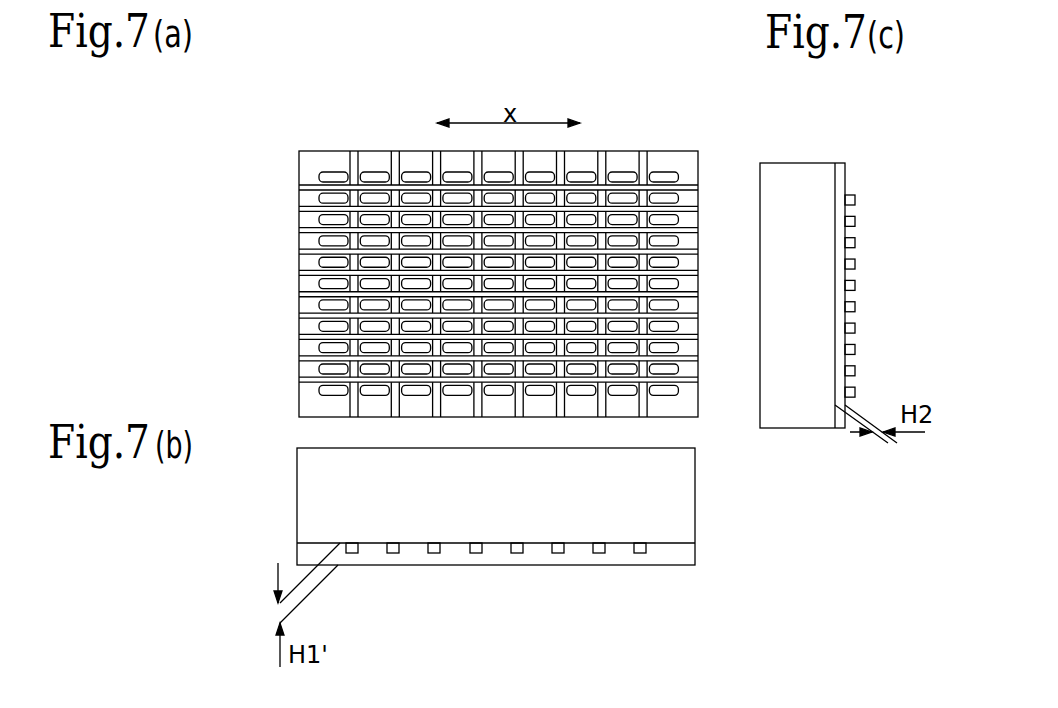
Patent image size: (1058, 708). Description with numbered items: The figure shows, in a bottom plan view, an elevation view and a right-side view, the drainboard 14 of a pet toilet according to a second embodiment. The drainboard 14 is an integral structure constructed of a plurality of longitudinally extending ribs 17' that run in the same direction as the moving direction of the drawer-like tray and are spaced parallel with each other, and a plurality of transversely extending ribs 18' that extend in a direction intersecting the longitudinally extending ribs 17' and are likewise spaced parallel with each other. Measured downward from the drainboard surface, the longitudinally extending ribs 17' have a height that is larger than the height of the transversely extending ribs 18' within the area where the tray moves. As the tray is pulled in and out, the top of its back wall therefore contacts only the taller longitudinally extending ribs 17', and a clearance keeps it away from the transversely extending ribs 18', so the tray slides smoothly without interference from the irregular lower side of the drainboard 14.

In FIG. 7A, the drainboard 14 is at (543, 188).
In FIG. 7B, the drainboard 14 is at (519, 572).
In FIG. 7C, the drainboard 14 is at (868, 239).
In FIG. 7A, the longitudinally extending ribs 17' is at (461, 283).
In FIG. 7B, the longitudinally extending ribs 17' is at (496, 594).
In FIG. 7C, the longitudinally extending ribs 17' is at (899, 296).
In FIG. 7A, the transversely extending ribs 18' is at (498, 310).
In FIG. 7B, the transversely extending ribs 18' is at (496, 594).
In FIG. 7C, the transversely extending ribs 18' is at (894, 295).